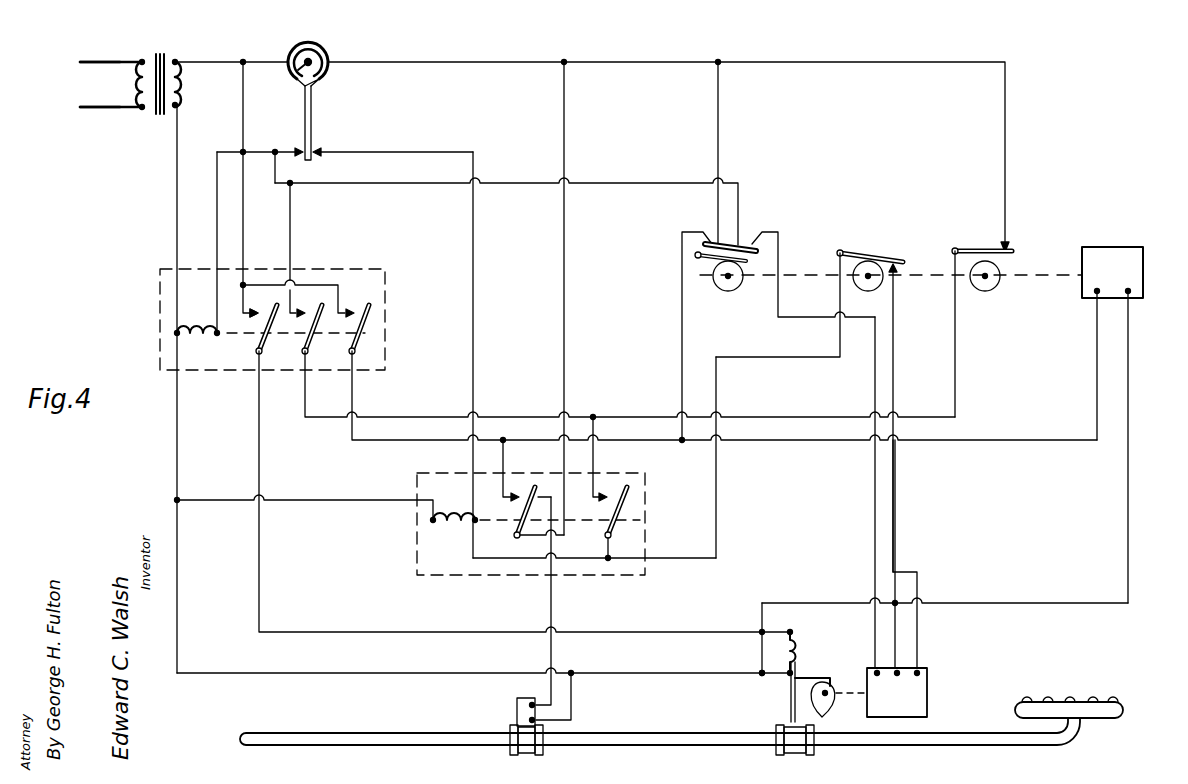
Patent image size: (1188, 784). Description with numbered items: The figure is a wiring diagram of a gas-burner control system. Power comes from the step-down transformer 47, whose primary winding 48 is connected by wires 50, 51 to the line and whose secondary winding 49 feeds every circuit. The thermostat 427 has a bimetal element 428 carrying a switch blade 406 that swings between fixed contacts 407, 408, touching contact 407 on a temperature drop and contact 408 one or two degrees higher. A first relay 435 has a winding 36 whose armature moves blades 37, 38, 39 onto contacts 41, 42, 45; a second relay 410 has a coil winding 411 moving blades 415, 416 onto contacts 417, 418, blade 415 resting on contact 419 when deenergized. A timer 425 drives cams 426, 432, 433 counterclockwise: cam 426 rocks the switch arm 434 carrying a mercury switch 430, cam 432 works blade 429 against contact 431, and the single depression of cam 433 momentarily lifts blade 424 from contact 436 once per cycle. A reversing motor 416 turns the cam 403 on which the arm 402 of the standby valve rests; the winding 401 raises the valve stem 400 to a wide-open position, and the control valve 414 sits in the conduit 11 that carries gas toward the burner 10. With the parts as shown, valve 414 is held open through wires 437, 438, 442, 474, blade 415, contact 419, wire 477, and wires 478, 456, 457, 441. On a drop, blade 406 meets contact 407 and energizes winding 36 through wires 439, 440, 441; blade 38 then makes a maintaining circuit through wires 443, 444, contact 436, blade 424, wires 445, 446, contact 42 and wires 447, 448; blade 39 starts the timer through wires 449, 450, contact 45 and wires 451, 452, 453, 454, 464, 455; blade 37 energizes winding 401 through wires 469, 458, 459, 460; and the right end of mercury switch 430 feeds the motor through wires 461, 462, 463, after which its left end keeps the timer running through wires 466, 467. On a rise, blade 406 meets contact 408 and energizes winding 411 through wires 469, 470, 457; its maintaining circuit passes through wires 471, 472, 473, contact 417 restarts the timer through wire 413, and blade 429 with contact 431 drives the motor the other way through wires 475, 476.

The spray manifold 10 is at (1062, 702).
The conduit 11 is at (686, 730).
The winding 36 is at (198, 319).
The switch blade 37 is at (272, 332).
The switch blade 38 is at (317, 333).
The switch blade 39 is at (363, 333).
The fixed electrical contact 41 is at (258, 308).
The fixed electrical contact 42 is at (304, 308).
The fixed electrical contact 45 is at (353, 308).
The step-down transformer 47 is at (110, 36).
The primary winding 48 is at (136, 88).
The secondary winding 49 is at (181, 88).
The wire 50 is at (95, 65).
The wire 51 is at (102, 110).
The valve stem 400 is at (797, 668).
The winding 401 is at (794, 640).
The arm 402 is at (822, 674).
The cam 403 is at (834, 690).
The switch blade 406 is at (312, 112).
The fixed electrical contact 407 is at (300, 156).
The fixed electrical contact 408 is at (321, 148).
The second relay 410 is at (396, 551).
The coil winding 411 is at (447, 514).
The wire 413 is at (505, 470).
The control valve 414 is at (514, 708).
The switch blade 415 is at (514, 537).
The switch blade 416 is at (611, 538).
The fixed electrical contact 417 is at (512, 502).
The fixed electrical contact 418 is at (626, 494).
The fixed electrical contact 419 is at (541, 494).
The switch blade 424 is at (960, 248).
The timer 425 is at (1142, 244).
The cam 426 is at (735, 291).
The thermostat 427 is at (324, 40).
The bimetal element 428 is at (330, 58).
The switch blade 429 is at (868, 254).
The mercury switch 430 is at (740, 242).
The fixed electrical contact 431 is at (897, 266).
The cam 432 is at (868, 291).
The cam 433 is at (985, 291).
The switch arm 434 is at (707, 264).
The relay 435 is at (152, 320).
The fixed electrical contact 436 is at (1007, 245).
The wire 437 is at (188, 62).
The wire 438 is at (258, 58).
The wire 439 is at (276, 150).
The wire 440 is at (217, 210).
The wire 441 is at (177, 233).
The wire 442 is at (486, 61).
The wire 443 is at (641, 61).
The wire 444 is at (876, 61).
The wire 445 is at (802, 416).
The wire 446 is at (428, 417).
The wire 447 is at (291, 240).
The wire 448 is at (245, 196).
The wire 449 is at (242, 134).
The wire 450 is at (312, 282).
The wire 451 is at (382, 442).
The wire 452 is at (614, 446).
The wire 453 is at (924, 444).
The wire 454 is at (1005, 600).
The wire 455 is at (660, 672).
The wire 456 is at (352, 673).
The wire 457 is at (177, 446).
The wire 458 is at (240, 307).
The wire 459 is at (261, 578).
The wire 460 is at (768, 677).
The wire 461 is at (603, 182).
The wire 462 is at (874, 470).
The wire 463 is at (900, 642).
The wire 464 is at (788, 602).
The wire 466 is at (720, 140).
The wire 467 is at (682, 350).
The wire 469 is at (475, 296).
The wire 470 is at (310, 498).
The wire 471 is at (595, 470).
The wire 472 is at (604, 548).
The wire 473 is at (527, 570).
The wire 474 is at (566, 284).
The wire 475 is at (720, 492).
The wire 476 is at (895, 496).
The wire 477 is at (554, 604).
The wire 478 is at (574, 690).